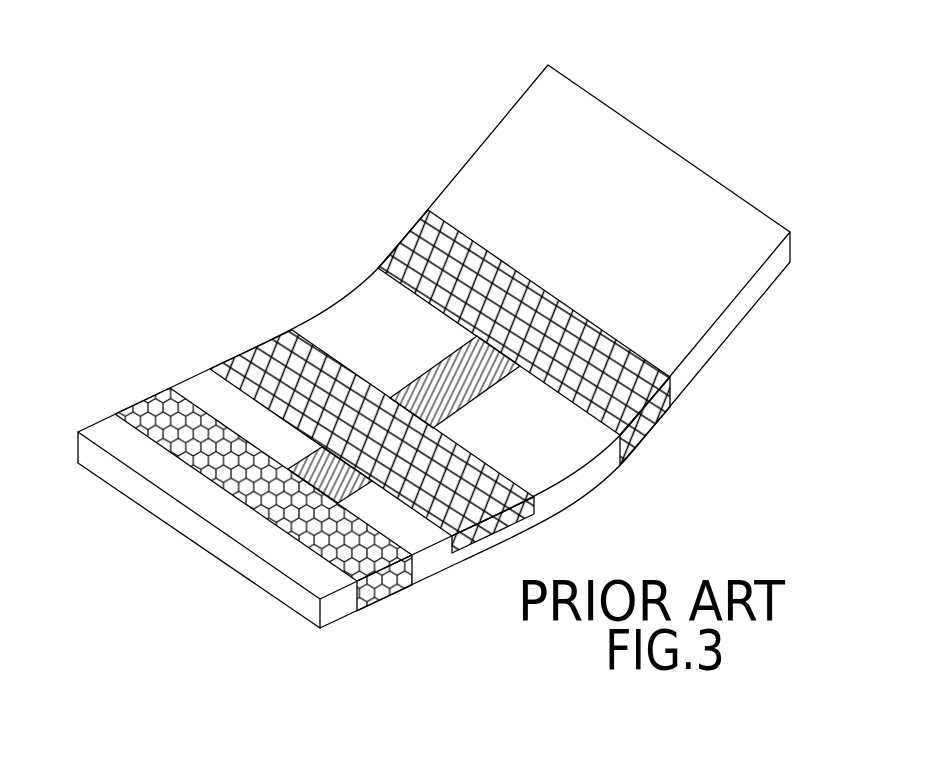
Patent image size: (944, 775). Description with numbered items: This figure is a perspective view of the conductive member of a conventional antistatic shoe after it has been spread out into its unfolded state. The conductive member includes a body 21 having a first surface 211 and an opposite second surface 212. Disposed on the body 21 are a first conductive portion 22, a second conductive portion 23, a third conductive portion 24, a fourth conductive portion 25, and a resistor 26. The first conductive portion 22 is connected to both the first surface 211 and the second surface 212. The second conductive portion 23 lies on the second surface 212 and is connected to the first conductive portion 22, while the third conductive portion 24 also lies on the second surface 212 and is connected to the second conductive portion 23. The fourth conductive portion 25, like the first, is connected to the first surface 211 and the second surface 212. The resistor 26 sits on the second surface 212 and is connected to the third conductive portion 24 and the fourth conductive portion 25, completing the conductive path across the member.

The body 21 is at (449, 326).
The first surface 211 is at (753, 307).
The second surface 212 is at (523, 167).
The first conductive portion 22 is at (663, 407).
The second conductive portion 23 is at (463, 380).
The third conductive portion 24 is at (264, 361).
The fourth conductive portion 25 is at (163, 427).
The resistor 26 is at (332, 472).